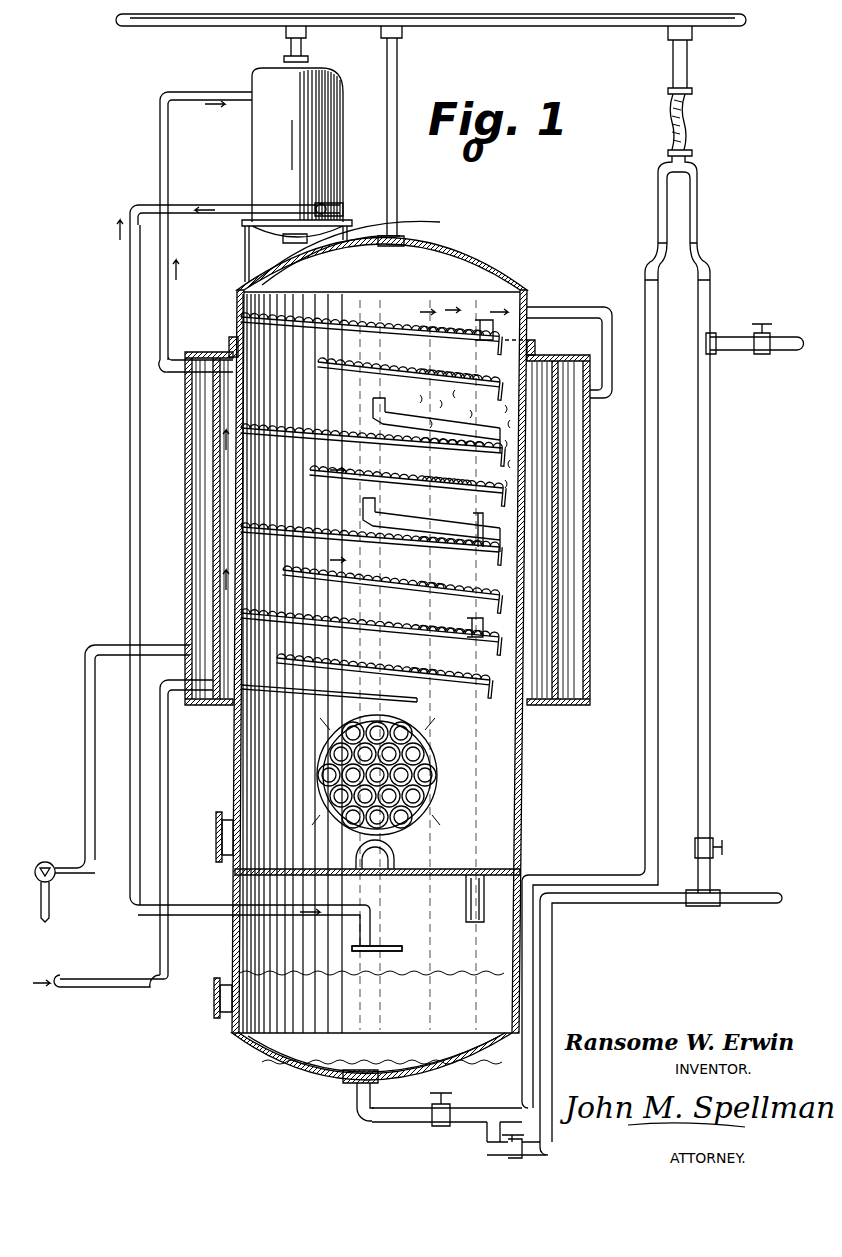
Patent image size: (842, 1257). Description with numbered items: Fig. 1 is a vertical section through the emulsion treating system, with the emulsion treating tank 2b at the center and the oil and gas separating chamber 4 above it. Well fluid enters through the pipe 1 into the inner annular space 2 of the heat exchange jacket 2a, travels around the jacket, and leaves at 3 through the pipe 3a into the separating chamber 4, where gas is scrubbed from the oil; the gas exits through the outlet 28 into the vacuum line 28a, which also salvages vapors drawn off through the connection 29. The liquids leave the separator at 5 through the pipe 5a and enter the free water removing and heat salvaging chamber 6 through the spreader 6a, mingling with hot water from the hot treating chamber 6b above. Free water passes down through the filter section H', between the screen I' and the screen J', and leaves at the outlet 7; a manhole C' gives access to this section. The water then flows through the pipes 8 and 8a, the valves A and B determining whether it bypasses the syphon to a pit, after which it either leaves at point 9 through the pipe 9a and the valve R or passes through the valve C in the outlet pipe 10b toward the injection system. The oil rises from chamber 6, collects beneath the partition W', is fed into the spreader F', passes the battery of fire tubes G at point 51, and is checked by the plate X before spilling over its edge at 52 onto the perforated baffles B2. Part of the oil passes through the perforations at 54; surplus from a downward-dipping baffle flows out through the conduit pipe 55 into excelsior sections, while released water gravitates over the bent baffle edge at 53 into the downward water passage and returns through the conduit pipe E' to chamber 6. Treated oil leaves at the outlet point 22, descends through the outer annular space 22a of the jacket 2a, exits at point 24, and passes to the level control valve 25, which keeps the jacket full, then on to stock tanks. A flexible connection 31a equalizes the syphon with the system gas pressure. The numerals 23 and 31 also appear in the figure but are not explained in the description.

The pipe 1 is at (120, 988).
The inner annular space 2 is at (212, 704).
The heat exchange jacket 2a is at (184, 533).
The emulsion treating tank 2b is at (528, 795).
The exit 3 is at (228, 345).
The pipe 3a is at (168, 172).
The oil and gas separating chamber 4 is at (252, 160).
The outlet 5 is at (342, 212).
The pipe 5a is at (205, 932).
The free water removing and heat salvaging chamber 6 is at (377, 889).
The spreader 6a is at (392, 945).
The hot treating chamber 6b is at (461, 707).
The outlet 7 is at (352, 1098).
The pipe 8 is at (522, 1068).
The pipe 8a is at (644, 808).
The water exit point 9 is at (755, 331).
The pipe 9a is at (712, 430).
The outlet pipe 10b is at (784, 352).
The outlet point 22 is at (525, 298).
The outer annular space 22a is at (205, 580).
The pipe 23 is at (700, 906).
The oil exit point 24 is at (178, 644).
The level control valve 25 is at (44, 860).
The gas outlet 28 is at (302, 47).
The vacuum line 28a is at (590, 27).
The gas draw-off 29 is at (399, 222).
The column 31 is at (666, 459).
The flexible connection 31a is at (688, 122).
The fire tube passage point 51 is at (440, 792).
The plate edge 52 is at (418, 695).
The bent edge point 53 is at (556, 665).
The perforation point 54 is at (410, 560).
The conduit pipe 55 is at (488, 425).
The perforated baffles B2 is at (480, 366).
The valve A is at (440, 1124).
The valve B is at (487, 1150).
The valve C is at (764, 322).
The valve R is at (724, 847).
The fire tube units G is at (420, 765).
The plate X is at (305, 717).
The spreader F' is at (395, 844).
The partition W' is at (465, 841).
The conduit pipe E' is at (477, 917).
The filter section H' is at (373, 1001).
The screen I' is at (451, 998).
The screen J' is at (425, 1054).
The manhole C' is at (201, 928).